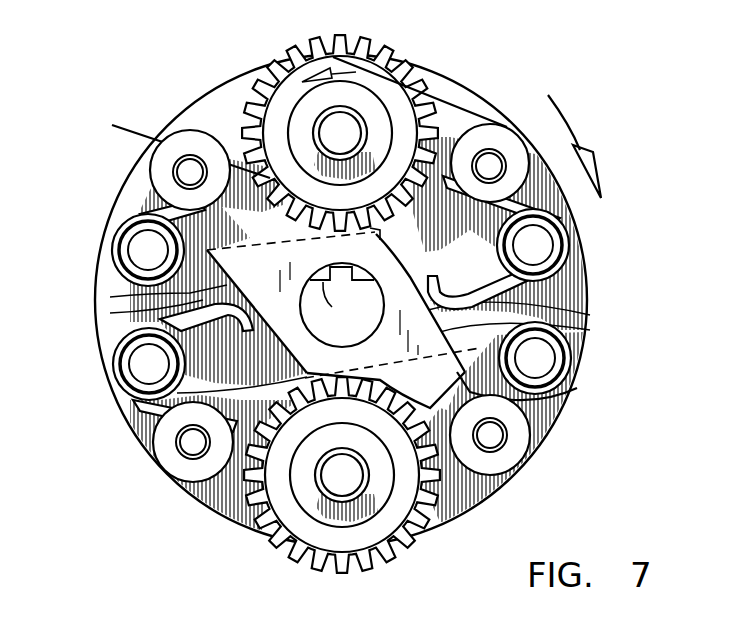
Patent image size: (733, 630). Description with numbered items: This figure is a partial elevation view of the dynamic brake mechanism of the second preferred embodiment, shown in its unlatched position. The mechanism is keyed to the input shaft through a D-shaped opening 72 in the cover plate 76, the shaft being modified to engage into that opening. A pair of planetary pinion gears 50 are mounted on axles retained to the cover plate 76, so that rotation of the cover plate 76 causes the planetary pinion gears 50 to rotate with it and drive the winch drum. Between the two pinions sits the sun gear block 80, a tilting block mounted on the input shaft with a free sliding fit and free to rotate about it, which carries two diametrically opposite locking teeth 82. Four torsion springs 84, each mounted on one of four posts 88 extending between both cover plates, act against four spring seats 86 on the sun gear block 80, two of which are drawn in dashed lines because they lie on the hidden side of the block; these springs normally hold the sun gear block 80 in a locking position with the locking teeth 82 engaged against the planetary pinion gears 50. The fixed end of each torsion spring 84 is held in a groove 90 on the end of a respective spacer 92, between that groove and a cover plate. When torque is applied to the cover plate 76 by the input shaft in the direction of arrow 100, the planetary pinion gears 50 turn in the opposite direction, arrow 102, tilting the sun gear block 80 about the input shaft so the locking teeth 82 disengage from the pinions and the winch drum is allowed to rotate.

The planetary pinion gear 50 is at (363, 48).
The D-shaped opening 72 is at (342, 305).
The cover plate 76 is at (230, 80).
The sun gear block 80 is at (500, 330).
The locking tooth 82 is at (75, 452).
The torsion spring 84 is at (125, 255).
The spring seat 86 is at (165, 205).
The post 88 is at (118, 238).
The groove 90 is at (177, 463).
The spacer 92 is at (178, 131).
The arrow 100 is at (575, 106).
The arrow 102 is at (338, 72).